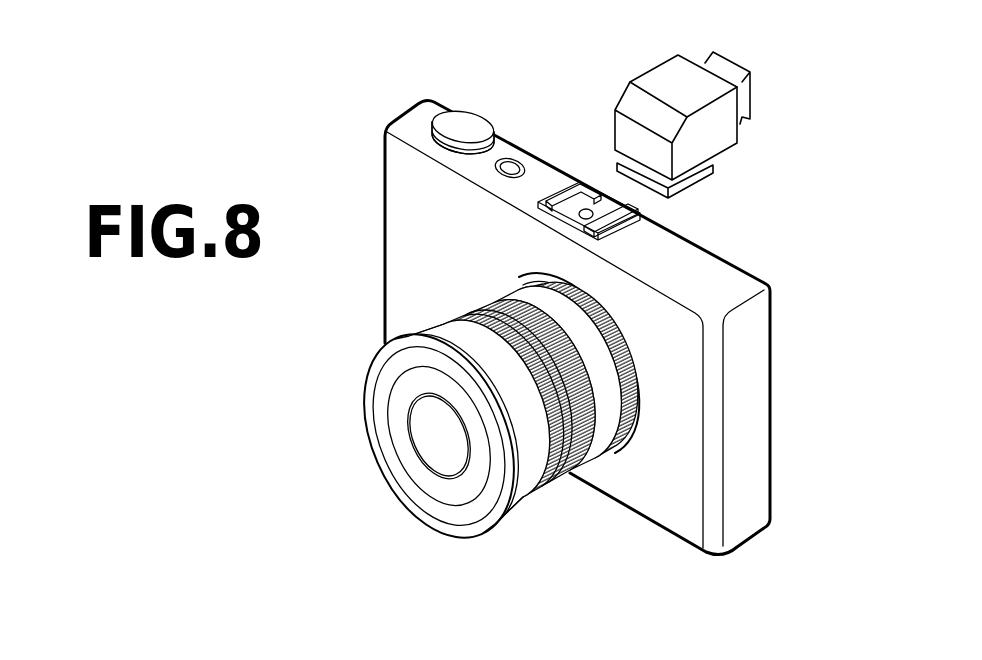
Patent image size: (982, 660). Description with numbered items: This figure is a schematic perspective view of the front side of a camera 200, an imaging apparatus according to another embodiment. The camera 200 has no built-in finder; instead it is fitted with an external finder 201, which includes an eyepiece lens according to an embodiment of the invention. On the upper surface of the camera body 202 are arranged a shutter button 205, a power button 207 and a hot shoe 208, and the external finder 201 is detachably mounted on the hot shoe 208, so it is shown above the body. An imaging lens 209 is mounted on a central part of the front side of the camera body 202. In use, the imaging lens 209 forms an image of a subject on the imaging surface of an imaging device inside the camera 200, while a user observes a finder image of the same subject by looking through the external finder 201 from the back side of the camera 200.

The camera 200 is at (313, 113).
The external finder 201 is at (668, 80).
The camera body 202 is at (760, 377).
The shutter button 205 is at (470, 118).
The power button 207 is at (513, 169).
The hot shoe 208 is at (565, 188).
The imaging lens 209 is at (423, 338).